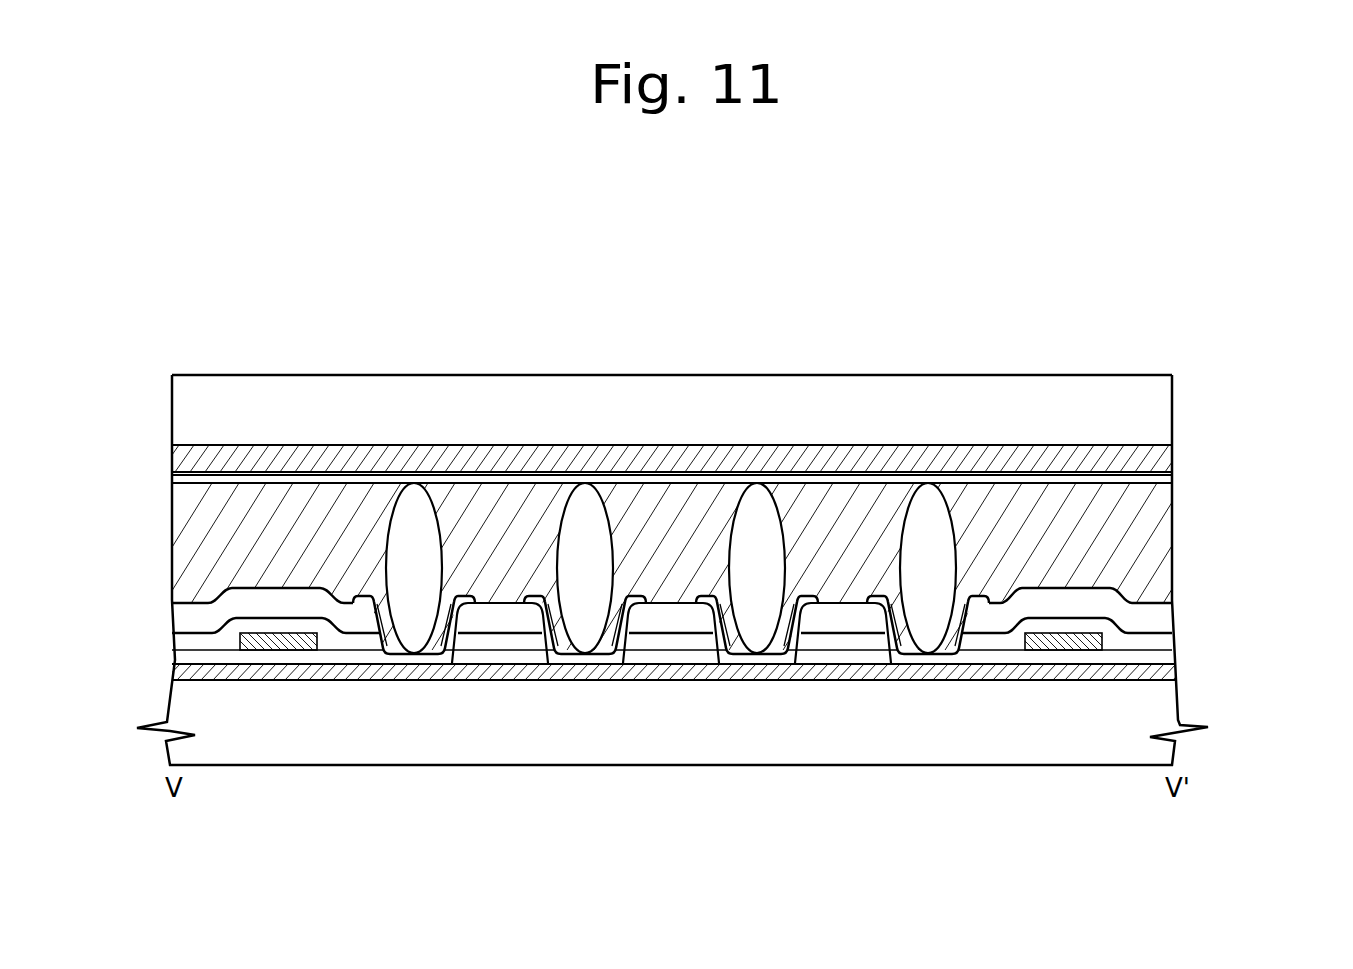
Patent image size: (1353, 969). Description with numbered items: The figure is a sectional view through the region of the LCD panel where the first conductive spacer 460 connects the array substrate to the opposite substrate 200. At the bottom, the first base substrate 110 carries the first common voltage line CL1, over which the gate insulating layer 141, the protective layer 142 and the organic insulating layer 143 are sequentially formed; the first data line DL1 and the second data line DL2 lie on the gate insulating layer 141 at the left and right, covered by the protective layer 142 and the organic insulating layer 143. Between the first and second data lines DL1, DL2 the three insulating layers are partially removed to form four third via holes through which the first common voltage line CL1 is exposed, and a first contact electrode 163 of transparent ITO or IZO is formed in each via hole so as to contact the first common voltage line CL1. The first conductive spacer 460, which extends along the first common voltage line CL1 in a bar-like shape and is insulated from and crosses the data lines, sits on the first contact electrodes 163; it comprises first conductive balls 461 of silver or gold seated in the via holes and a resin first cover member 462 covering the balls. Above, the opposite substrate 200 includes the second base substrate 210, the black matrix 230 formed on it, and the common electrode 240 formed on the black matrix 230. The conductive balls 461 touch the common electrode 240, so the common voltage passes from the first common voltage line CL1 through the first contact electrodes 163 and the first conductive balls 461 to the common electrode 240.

The first base substrate 110 is at (1165, 705).
The gate insulating layer 141 is at (215, 658).
The protective layer 142 is at (188, 647).
The organic insulating layer 143 is at (188, 620).
The first contact electrode 163 is at (420, 660).
The opposite substrate 200 is at (752, 440).
The second base substrate 210 is at (1162, 408).
The black matrix 230 is at (1163, 455).
The common electrode 240 is at (724, 490).
The first conductive spacer 460 is at (696, 460).
The first conductive ball 461 is at (414, 515).
The first cover member 462 is at (290, 505).
The first common voltage line CL1 is at (665, 672).
The first data line DL1 is at (290, 645).
The second data line DL2 is at (1063, 642).